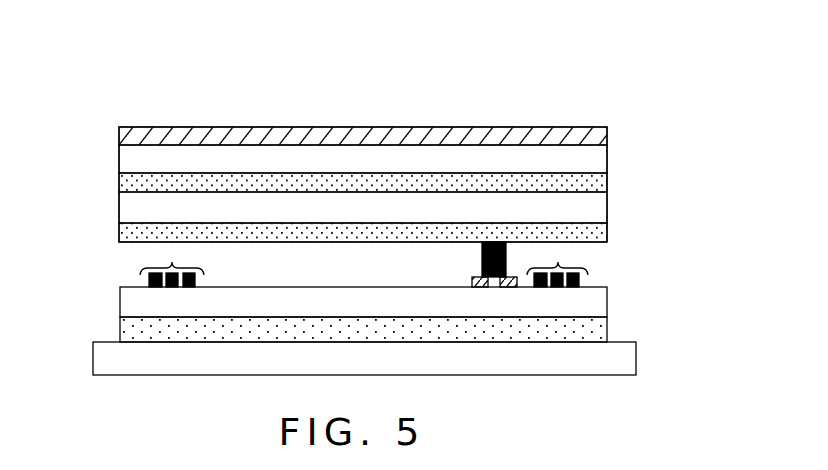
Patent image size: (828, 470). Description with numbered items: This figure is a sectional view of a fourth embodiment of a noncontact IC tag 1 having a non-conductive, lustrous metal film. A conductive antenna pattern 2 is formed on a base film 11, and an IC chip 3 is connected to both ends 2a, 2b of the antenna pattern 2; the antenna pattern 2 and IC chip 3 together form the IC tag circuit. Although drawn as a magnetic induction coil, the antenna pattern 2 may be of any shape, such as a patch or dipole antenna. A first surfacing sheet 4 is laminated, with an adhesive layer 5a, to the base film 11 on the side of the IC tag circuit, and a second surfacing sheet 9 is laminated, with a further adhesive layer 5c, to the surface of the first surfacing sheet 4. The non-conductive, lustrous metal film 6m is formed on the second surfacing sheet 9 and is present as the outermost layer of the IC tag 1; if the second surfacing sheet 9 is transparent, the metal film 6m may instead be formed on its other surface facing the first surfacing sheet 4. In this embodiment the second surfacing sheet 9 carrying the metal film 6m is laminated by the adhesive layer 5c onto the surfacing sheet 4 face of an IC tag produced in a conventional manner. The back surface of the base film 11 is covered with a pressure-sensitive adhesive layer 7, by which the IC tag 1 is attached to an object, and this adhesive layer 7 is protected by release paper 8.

The noncontact IC tag 1 is at (300, 113).
The antenna pattern 2 is at (172, 262).
The end of the antenna pattern 2a is at (472, 277).
The end of the antenna pattern 2b is at (511, 277).
The IC chip 3 is at (492, 242).
The first surfacing sheet 4 is at (131, 209).
The adhesive layer 5a is at (603, 233).
The adhesive layer 5c is at (605, 183).
The non-conductive, lustrous metal film 6m is at (598, 131).
The pressure-sensitive adhesive layer 7 is at (603, 325).
The release paper 8 is at (632, 357).
The second surfacing sheet 9 is at (601, 158).
The base film 11 is at (603, 302).